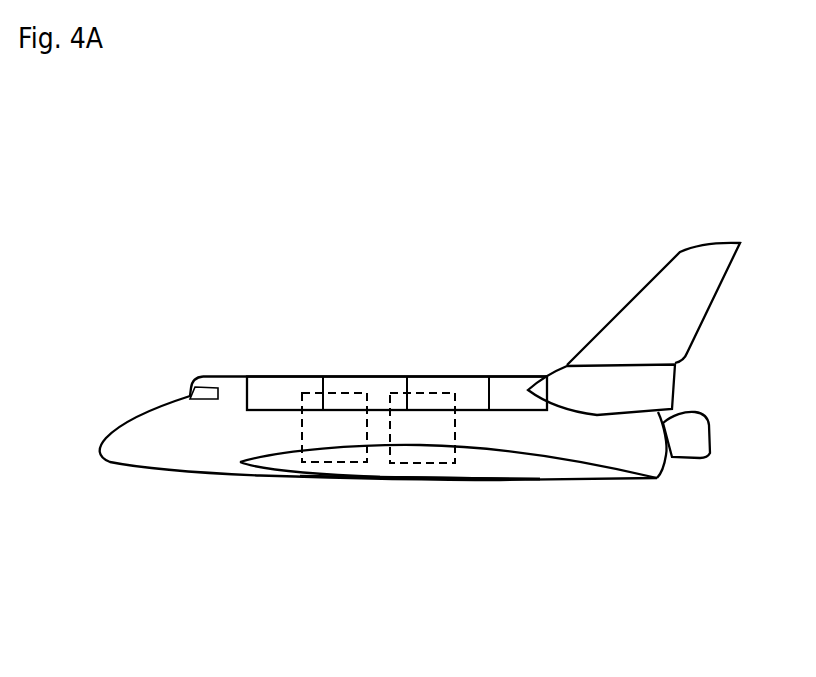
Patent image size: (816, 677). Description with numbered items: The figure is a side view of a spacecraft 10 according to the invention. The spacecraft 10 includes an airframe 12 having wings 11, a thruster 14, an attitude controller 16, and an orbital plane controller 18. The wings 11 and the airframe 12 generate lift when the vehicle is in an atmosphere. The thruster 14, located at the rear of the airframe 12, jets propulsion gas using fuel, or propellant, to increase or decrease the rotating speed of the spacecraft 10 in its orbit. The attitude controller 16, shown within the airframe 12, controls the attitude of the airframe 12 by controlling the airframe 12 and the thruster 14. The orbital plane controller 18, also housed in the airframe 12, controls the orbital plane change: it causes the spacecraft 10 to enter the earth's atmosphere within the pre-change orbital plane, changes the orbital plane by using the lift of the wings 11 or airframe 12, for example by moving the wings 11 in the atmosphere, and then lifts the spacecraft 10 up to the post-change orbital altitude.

The spacecraft 10 is at (215, 350).
The wings 11 is at (438, 467).
The airframe 12 is at (348, 373).
The thruster 14 is at (597, 383).
The attitude controller 16 is at (340, 437).
The orbital plane controller 18 is at (423, 418).